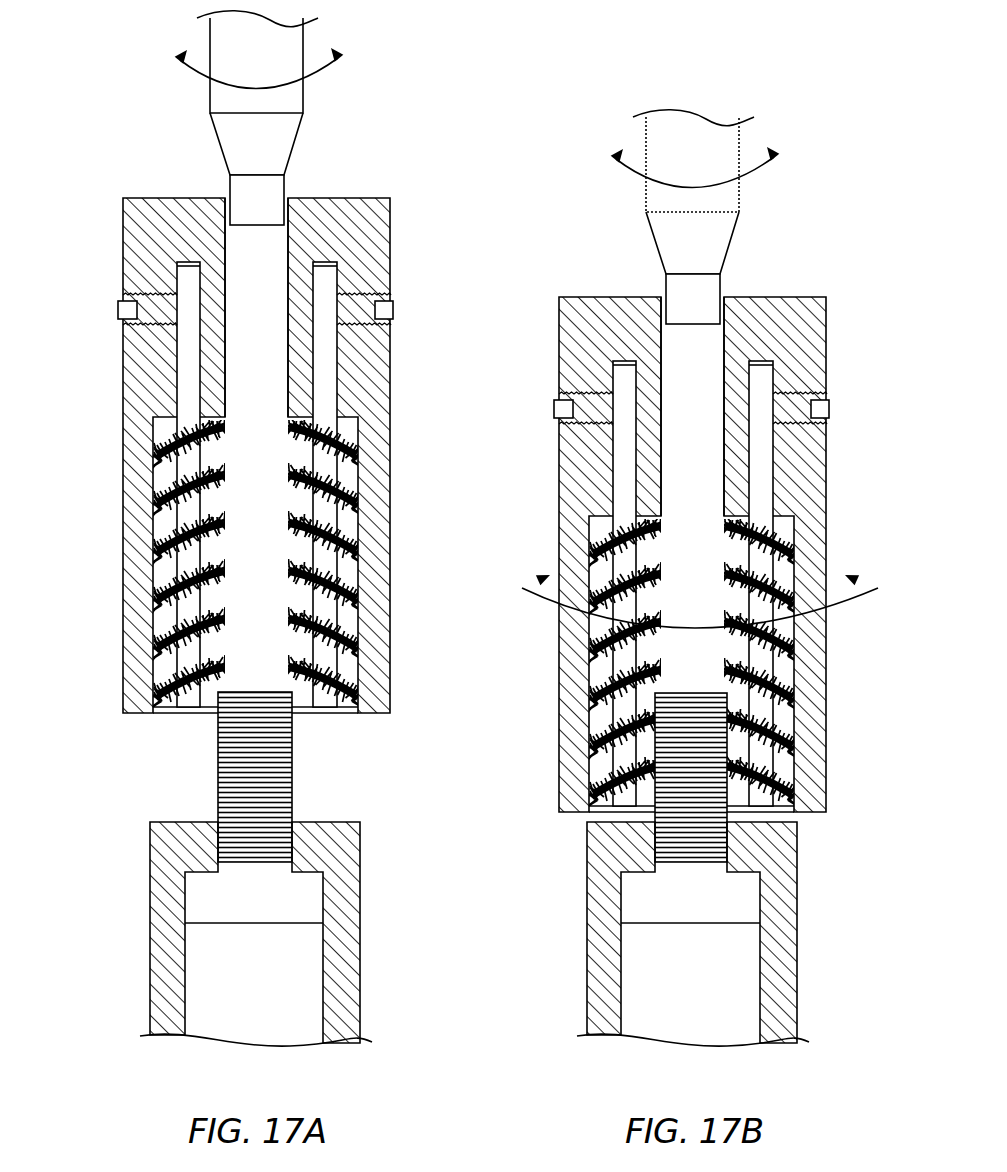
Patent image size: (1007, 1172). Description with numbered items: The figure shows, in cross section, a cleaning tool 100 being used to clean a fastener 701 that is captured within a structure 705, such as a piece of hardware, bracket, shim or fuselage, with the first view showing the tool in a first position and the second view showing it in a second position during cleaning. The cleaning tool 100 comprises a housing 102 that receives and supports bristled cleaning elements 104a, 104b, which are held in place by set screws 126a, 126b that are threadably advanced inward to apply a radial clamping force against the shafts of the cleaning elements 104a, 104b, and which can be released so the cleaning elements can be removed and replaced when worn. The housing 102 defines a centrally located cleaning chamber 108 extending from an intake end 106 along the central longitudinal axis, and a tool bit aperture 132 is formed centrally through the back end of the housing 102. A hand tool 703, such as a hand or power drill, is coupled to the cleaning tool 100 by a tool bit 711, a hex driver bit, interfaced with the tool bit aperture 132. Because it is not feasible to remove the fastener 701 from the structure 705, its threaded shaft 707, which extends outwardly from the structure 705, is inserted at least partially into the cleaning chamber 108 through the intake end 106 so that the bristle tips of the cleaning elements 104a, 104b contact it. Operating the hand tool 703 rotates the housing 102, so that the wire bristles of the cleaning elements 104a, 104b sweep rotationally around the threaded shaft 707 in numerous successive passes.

In FIG. 17A, the cleaning tool 100 is at (254, 528).
In FIG. 17B, the cleaning tool 100 is at (684, 578).
In FIG. 17A, the housing 102 is at (162, 218).
In FIG. 17B, the housing 102 is at (602, 330).
In FIG. 17A, the cleaning element 104a is at (332, 382).
In FIG. 17B, the cleaning element 104a is at (767, 492).
In FIG. 17A, the cleaning element 104b is at (190, 378).
In FIG. 17B, the cleaning element 104b is at (625, 487).
In FIG. 17A, the intake end 106 is at (243, 657).
In FIG. 17A, the cleaning chamber 108 is at (240, 556).
In FIG. 17B, the cleaning chamber 108 is at (670, 660).
In FIG. 17A, the set screw 126a is at (394, 303).
In FIG. 17B, the set screw 126a is at (830, 405).
In FIG. 17A, the set screw 126b is at (118, 299).
In FIG. 17B, the set screw 126b is at (556, 408).
In FIG. 17A, the tool bit aperture 132 is at (293, 207).
In FIG. 17B, the tool bit aperture 132 is at (727, 314).
In FIG. 17A, the fastener 701 is at (232, 896).
In FIG. 17B, the fastener 701 is at (660, 905).
In FIG. 17A, the hand tool 703 is at (222, 28).
In FIG. 17B, the hand tool 703 is at (655, 138).
In FIG. 17A, the structure 705 is at (335, 842).
In FIG. 17B, the structure 705 is at (772, 875).
In FIG. 17A, the threaded shaft 707 is at (240, 768).
In FIG. 17B, the threaded shaft 707 is at (680, 840).
In FIG. 17A, the tool bit 711 is at (245, 210).
In FIG. 17B, the tool bit 711 is at (677, 318).